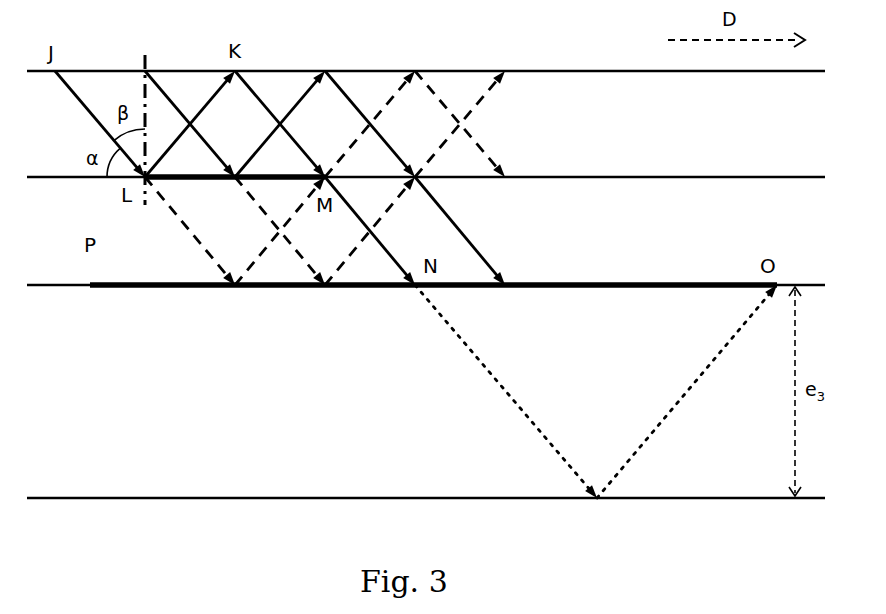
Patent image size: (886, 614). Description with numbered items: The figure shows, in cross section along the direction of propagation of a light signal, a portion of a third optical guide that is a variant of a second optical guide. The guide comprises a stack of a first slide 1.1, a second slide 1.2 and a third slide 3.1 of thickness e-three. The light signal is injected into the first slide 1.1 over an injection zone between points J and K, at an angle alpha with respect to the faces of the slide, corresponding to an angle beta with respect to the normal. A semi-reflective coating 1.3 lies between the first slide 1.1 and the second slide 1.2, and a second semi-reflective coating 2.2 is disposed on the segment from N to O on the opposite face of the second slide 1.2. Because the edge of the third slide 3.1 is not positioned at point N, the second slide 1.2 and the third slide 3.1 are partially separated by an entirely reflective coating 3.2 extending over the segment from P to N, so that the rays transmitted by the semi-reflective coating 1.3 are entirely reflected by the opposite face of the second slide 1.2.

The first slide 1.1 is at (598, 78).
The second slide 1.2 is at (617, 185).
The semi-reflective coating 1.3 is at (200, 180).
The semi-reflective coating 2.2 is at (615, 290).
The third slide 3.1 is at (685, 500).
The entirely reflective coating 3.2 is at (183, 290).